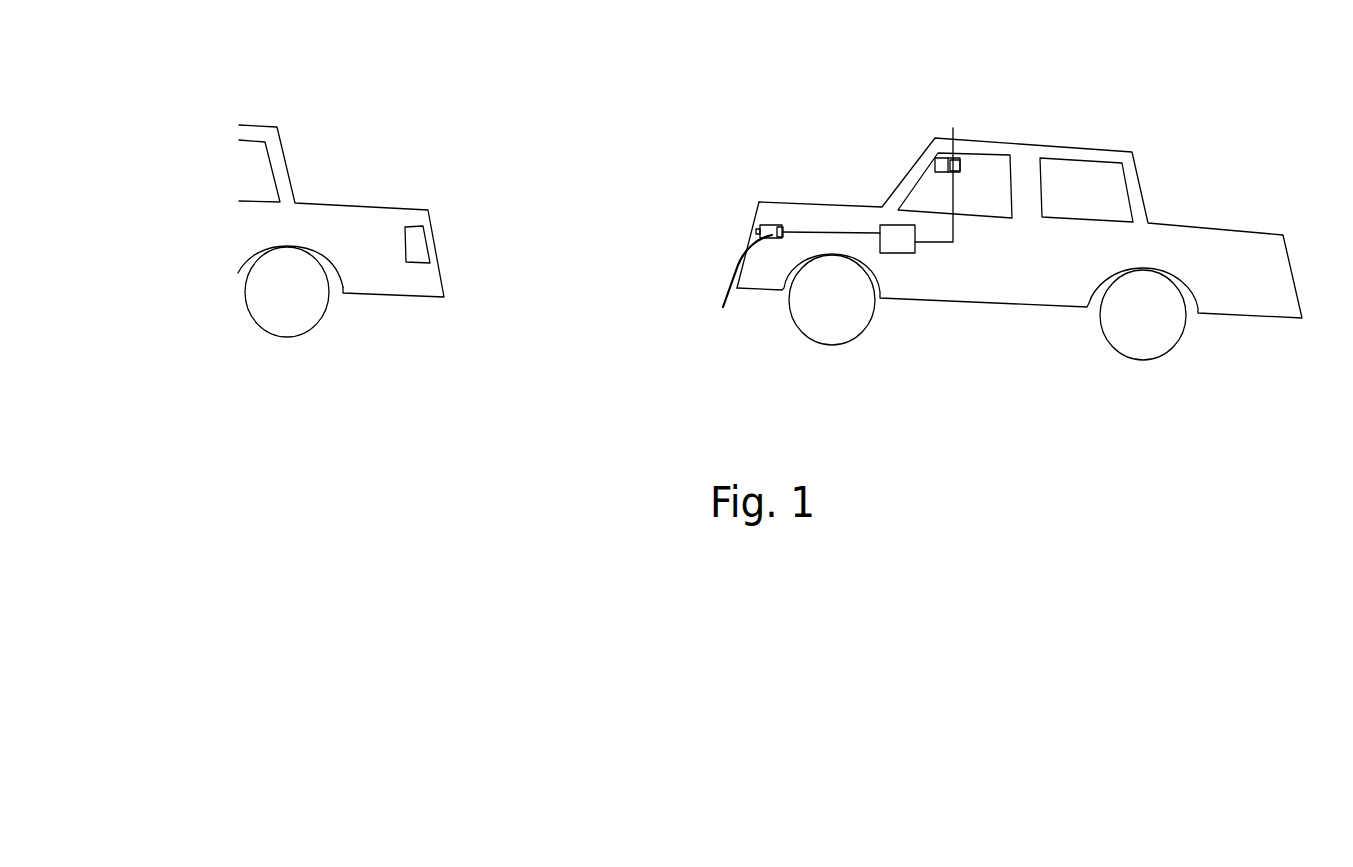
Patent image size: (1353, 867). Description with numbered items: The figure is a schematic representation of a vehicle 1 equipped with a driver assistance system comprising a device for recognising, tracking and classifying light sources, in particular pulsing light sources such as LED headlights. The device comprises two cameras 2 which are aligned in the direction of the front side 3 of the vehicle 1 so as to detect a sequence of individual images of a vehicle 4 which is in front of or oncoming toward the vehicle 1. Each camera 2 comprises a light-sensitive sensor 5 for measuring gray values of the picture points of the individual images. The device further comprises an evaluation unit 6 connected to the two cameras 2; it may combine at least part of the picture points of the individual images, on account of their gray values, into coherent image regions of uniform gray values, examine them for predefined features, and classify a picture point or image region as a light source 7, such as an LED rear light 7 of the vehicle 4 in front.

The vehicle 1 is at (1001, 130).
The camera 2 is at (776, 225).
The front side 3 is at (757, 213).
The vehicle 4 is at (262, 103).
The light-sensitive sensor 5 is at (828, 215).
The evaluation unit 6 is at (900, 243).
The light source 7 is at (420, 248).